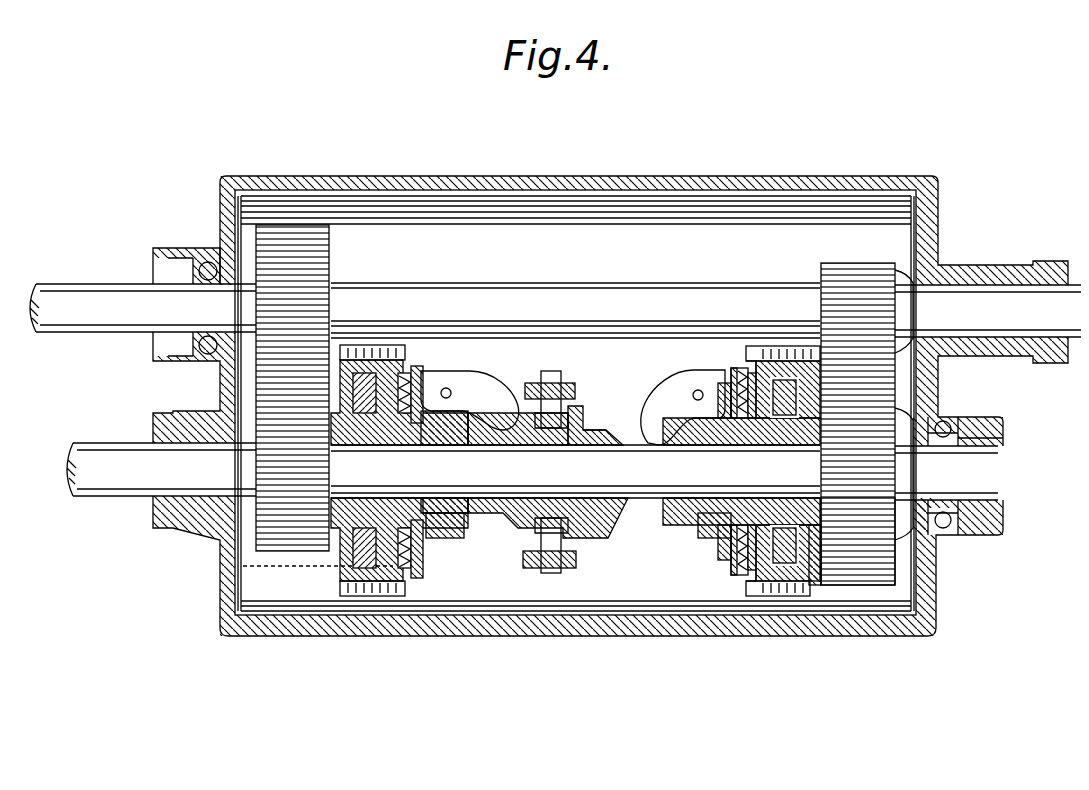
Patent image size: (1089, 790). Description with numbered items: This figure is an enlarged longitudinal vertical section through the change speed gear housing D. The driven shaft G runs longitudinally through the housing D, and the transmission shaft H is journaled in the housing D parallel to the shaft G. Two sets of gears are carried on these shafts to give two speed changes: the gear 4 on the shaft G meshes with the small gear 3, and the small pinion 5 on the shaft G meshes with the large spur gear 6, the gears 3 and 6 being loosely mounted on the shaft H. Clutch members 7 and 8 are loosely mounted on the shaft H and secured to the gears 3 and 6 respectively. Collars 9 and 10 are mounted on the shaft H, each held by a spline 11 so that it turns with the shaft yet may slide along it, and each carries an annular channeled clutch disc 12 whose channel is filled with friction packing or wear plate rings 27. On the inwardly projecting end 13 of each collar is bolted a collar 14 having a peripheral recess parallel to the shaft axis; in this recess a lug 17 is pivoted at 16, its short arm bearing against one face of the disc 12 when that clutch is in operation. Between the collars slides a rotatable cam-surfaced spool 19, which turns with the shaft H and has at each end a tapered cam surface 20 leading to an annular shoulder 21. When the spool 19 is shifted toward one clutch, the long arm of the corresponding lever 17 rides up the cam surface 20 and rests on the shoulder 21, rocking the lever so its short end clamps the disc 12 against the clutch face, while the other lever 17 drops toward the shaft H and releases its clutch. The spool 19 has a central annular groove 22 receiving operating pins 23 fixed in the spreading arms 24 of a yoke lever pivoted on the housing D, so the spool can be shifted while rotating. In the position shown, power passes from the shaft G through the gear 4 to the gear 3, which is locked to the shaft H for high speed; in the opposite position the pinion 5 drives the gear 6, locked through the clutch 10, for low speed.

The gear 3 is at (268, 545).
The gear 4 is at (290, 240).
The small pinion 5 is at (846, 263).
The large spur gear 6 is at (855, 565).
The clutch member 7 is at (333, 555).
The clutch member 8 is at (806, 577).
The collar 9 is at (385, 590).
The collar 10 is at (705, 530).
The spline 11 is at (400, 560).
The annular channeled clutch disc 12 is at (410, 385).
The inwardly projecting end 13 is at (456, 515).
The collar 14 is at (440, 530).
The pivot 16 is at (470, 378).
The lug 17 is at (440, 381).
The cam-surfaced spool 19 is at (590, 420).
The tapered cam surface 20 is at (612, 505).
The annular shoulder 21 is at (605, 428).
The central annular groove 22 is at (575, 398).
The operating pin 23 is at (541, 374).
The spreading arm 24 is at (558, 565).
The friction packing 27 is at (395, 570).
The change speed gear housing D is at (648, 648).
The driven shaft G is at (96, 290).
The transmission shaft H is at (105, 440).